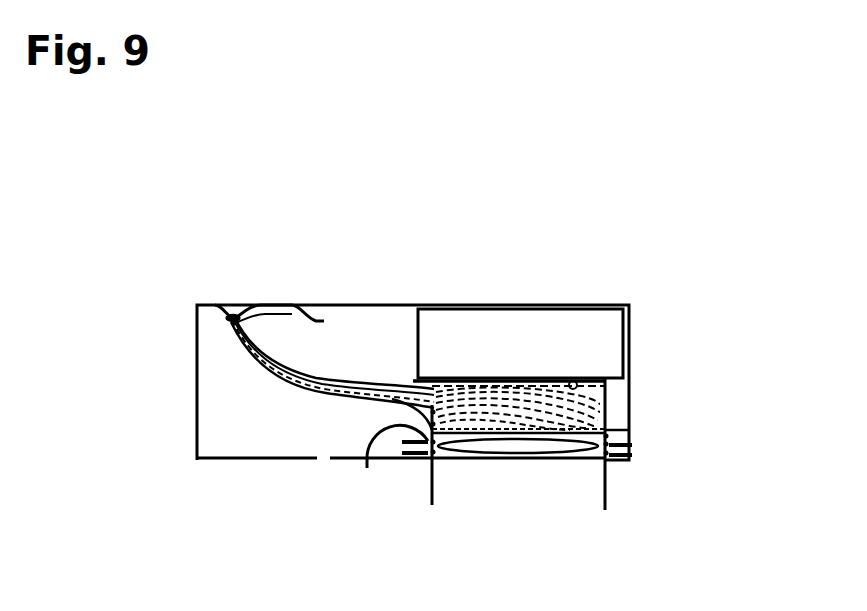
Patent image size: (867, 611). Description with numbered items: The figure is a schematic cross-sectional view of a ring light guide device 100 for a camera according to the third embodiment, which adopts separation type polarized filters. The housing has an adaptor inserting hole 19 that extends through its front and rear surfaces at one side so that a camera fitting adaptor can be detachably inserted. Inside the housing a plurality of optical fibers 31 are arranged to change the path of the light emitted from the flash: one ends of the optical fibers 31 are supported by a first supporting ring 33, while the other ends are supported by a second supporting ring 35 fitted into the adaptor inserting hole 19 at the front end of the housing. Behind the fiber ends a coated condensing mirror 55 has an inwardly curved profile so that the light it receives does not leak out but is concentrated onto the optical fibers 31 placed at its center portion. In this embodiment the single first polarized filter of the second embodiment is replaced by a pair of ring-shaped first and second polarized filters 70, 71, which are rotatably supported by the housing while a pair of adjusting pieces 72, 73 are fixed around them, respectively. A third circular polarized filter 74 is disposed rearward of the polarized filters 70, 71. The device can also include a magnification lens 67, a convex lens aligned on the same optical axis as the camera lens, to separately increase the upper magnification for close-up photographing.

The web guide device 100 is at (456, 290).
The condensing mirror 55 is at (232, 316).
The first supporting ring 33 is at (315, 320).
The optical fibers 31 is at (300, 388).
The adaptor inserting hole 19 is at (612, 347).
The third circular polarized filter 74 is at (575, 380).
The second supporting ring 35 is at (613, 427).
The adjusting piece 72 is at (632, 445).
The adjusting piece 73 is at (632, 454).
The first polarized filter 70 is at (373, 438).
The second polarized filter 71 is at (430, 458).
The magnification lens 67 is at (492, 455).